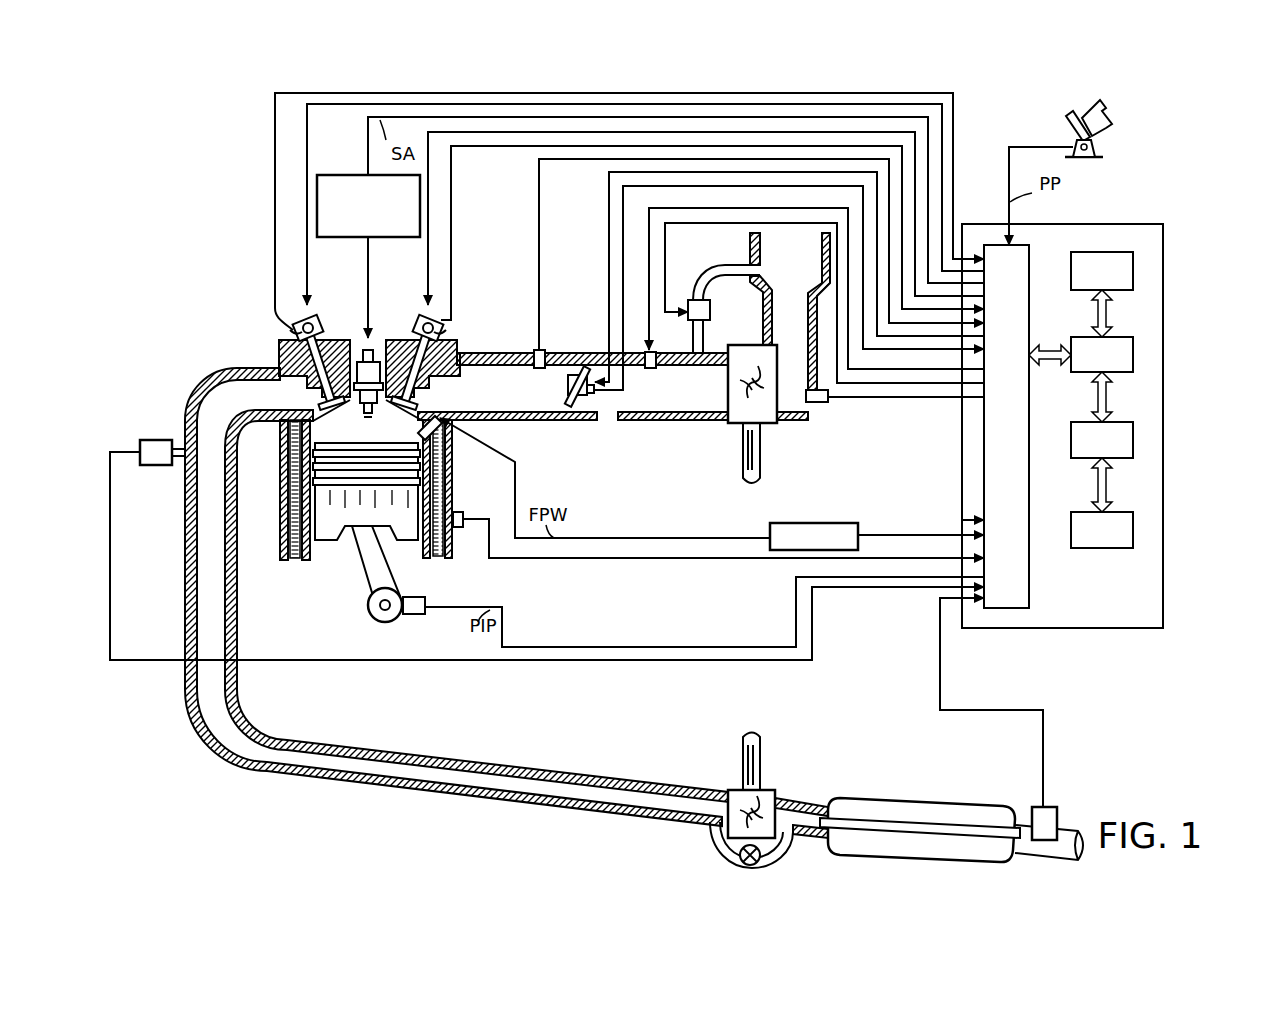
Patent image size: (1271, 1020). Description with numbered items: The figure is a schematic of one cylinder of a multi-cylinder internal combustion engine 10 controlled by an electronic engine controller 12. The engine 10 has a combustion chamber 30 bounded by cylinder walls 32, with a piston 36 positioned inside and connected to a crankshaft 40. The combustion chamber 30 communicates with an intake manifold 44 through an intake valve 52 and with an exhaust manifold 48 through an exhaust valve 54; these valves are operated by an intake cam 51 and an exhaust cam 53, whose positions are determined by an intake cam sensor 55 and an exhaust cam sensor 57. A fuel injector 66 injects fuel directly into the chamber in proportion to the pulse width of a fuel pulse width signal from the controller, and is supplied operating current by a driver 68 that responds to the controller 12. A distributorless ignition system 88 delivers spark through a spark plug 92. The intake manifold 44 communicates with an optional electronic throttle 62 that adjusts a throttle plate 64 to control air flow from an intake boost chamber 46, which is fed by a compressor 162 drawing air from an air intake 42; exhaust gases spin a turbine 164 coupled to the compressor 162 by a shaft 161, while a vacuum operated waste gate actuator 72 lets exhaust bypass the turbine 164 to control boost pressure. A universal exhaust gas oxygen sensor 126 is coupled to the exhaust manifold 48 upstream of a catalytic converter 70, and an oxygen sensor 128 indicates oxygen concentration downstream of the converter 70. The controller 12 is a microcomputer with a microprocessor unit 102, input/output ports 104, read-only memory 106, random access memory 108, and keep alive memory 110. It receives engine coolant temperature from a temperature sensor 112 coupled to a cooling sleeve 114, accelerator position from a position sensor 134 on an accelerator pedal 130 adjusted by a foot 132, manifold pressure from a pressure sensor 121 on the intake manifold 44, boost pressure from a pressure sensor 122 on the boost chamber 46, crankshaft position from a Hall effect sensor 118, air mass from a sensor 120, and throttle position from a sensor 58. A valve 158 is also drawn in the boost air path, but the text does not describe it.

The internal combustion engine 10 is at (222, 297).
The electronic engine controller 12 is at (1103, 411).
The combustion chamber 30 is at (367, 430).
The cylinder walls 32 is at (379, 516).
The piston 36 is at (355, 523).
The crankshaft 40 is at (368, 612).
The air intake 42 is at (779, 276).
The intake manifold 44 is at (489, 400).
The intake boost chamber 46 is at (651, 400).
The exhaust manifold 48 is at (240, 404).
The intake cam 51 is at (427, 316).
The intake valve 52 is at (402, 407).
The exhaust cam 53 is at (308, 316).
The exhaust valve 54 is at (332, 405).
The intake cam sensor 55 is at (441, 330).
The exhaust cam sensor 57 is at (295, 332).
The throttle position sensor 58 is at (593, 392).
The electronic throttle 62 is at (602, 375).
The throttle plate 64 is at (586, 355).
The fuel injector 66 is at (470, 441).
The driver 68 is at (858, 540).
The catalytic converter 70 is at (828, 848).
The waste gate actuator 72 is at (740, 862).
The distributorless ignition system 88 is at (327, 176).
The spark plug 92 is at (376, 347).
The microprocessor unit 102 is at (1140, 357).
The input/output ports 104 is at (1030, 252).
The read-only memory 106 is at (1140, 268).
The random access memory 108 is at (1140, 442).
The keep alive memory 110 is at (1140, 532).
The temperature sensor 112 is at (463, 514).
The cooling sleeve 114 is at (452, 548).
The Hall effect sensor 118 is at (414, 615).
The air mass sensor 120 is at (827, 402).
The pressure sensor 121 is at (534, 350).
The pressure sensor 122 is at (652, 352).
The Universal Exhaust Gas Oxygen sensor 126 is at (140, 447).
The oxygen sensor 128 is at (1047, 803).
The accelerator pedal 130 is at (1115, 128).
The foot 132 is at (1110, 113).
The position sensor 134 is at (1093, 150).
The compressor bypass valve 158 is at (710, 312).
The shaft 161 is at (742, 448).
The compressor 162 is at (754, 345).
The turbine 164 is at (733, 788).